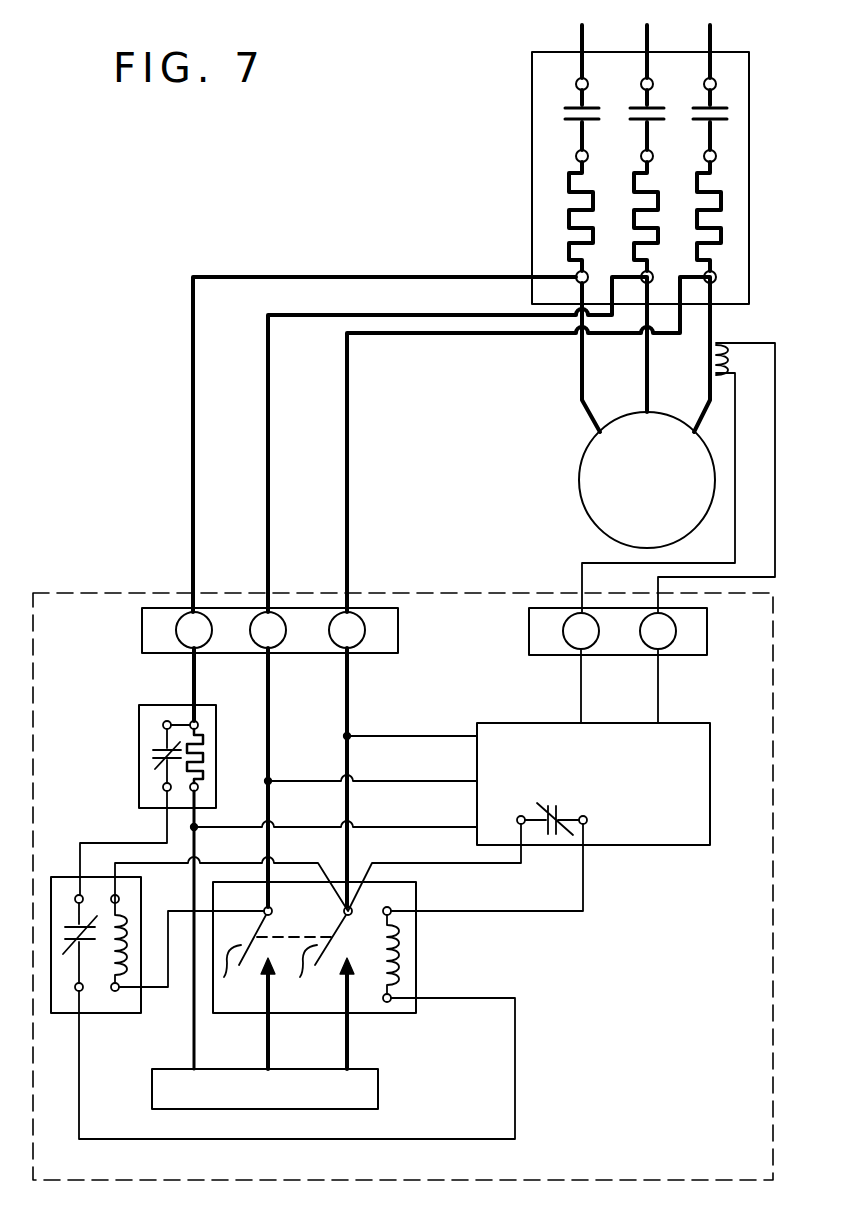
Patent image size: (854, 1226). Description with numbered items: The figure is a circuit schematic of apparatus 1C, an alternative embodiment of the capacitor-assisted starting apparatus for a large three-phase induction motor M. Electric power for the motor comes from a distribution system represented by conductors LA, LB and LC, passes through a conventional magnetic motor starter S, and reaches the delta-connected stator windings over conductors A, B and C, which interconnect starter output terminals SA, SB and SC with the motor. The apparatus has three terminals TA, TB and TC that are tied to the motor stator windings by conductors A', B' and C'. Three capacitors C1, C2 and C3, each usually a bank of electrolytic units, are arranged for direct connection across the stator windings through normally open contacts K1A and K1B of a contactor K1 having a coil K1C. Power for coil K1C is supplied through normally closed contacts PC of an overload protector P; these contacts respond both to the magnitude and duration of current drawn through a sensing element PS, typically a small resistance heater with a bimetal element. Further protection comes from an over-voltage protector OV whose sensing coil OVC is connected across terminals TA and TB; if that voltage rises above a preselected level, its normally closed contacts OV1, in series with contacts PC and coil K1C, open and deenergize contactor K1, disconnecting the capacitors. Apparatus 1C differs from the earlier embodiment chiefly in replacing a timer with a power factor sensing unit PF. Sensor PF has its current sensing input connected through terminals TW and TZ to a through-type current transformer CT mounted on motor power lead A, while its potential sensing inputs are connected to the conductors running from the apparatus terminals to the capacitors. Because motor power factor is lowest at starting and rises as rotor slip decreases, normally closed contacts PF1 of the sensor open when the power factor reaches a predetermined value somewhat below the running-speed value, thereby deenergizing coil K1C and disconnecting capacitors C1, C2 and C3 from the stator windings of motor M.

The conductor LC is at (585, 35).
The conductor LB is at (650, 35).
The conductor LA is at (713, 35).
The magnetic motor starter S is at (532, 156).
The starter output terminal SC is at (588, 275).
The starter output terminal SB is at (653, 275).
The starter output terminal SA is at (716, 275).
The conductor C' is at (384, 425).
The conductor B' is at (457, 444).
The conductor A' is at (528, 444).
The conductor C is at (566, 357).
The conductor B is at (622, 347).
The conductor A is at (737, 357).
The through-type current transformer CT is at (702, 374).
The three-phase induction motor M is at (647, 480).
The apparatus 1C is at (150, 590).
The terminal TC is at (194, 630).
The terminal TB is at (268, 630).
The terminal TA is at (347, 630).
The terminal TW is at (581, 631).
The terminal TZ is at (658, 631).
The overload protector P is at (166, 750).
The normally closed contacts PC is at (154, 746).
The sensing element PS is at (203, 760).
The power factor sensing unit PF is at (605, 763).
The normally closed contacts PF1 is at (560, 806).
The over-voltage protector OV is at (120, 938).
The normally closed contacts OV1 is at (68, 890).
The sensing coil OVC is at (107, 974).
The contactor K1 is at (352, 968).
The normally open contacts K1A is at (320, 955).
The normally open contacts K1B is at (247, 955).
The coil K1C is at (400, 965).
The capacitor C1 is at (193, 1093).
The capacitor C2 is at (268, 1031).
The capacitor C3 is at (343, 1031).